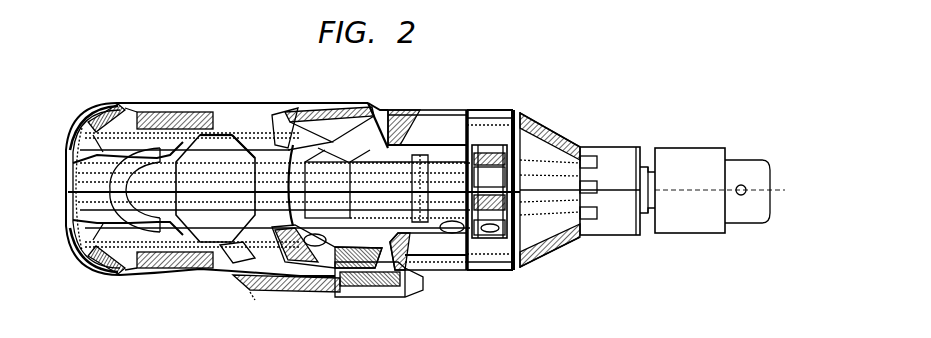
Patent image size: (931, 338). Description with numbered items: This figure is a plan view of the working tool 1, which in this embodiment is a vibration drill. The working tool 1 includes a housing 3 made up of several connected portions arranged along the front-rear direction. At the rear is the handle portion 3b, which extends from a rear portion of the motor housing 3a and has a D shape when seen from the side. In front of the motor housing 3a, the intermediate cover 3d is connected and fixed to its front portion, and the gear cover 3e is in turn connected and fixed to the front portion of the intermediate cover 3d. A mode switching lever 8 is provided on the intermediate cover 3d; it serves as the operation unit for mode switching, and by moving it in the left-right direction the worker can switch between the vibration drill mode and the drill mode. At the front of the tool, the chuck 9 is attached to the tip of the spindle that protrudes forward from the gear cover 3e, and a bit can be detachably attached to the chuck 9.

The working tool 1 is at (659, 329).
The housing 3 is at (459, 270).
The motor housing 3a is at (408, 165).
The handle portion 3b is at (96, 150).
The intermediate cover 3d is at (501, 120).
The gear cover 3e is at (620, 153).
The mode switching lever 8 is at (479, 141).
The chuck 9 is at (700, 160).